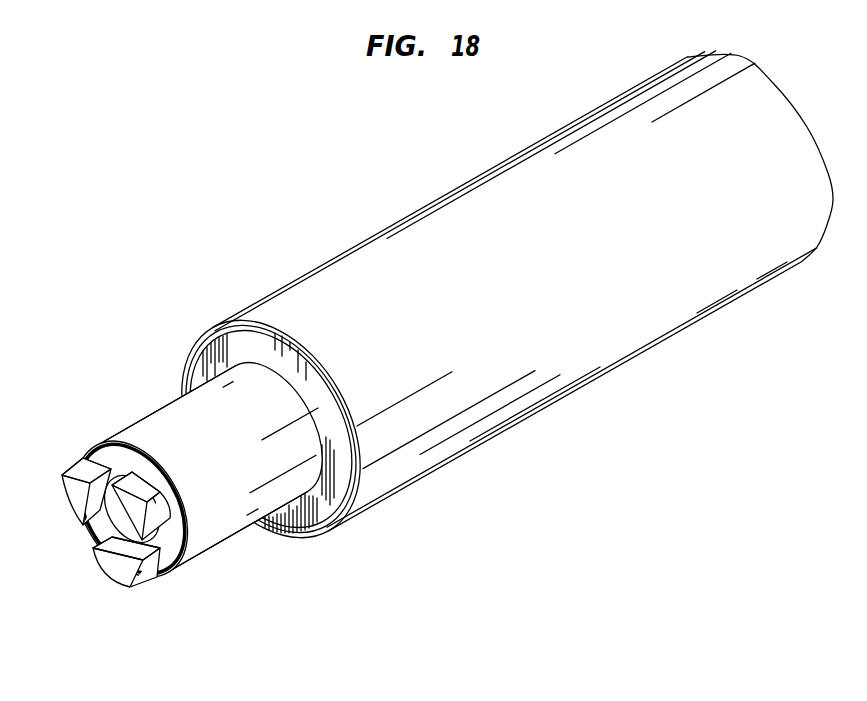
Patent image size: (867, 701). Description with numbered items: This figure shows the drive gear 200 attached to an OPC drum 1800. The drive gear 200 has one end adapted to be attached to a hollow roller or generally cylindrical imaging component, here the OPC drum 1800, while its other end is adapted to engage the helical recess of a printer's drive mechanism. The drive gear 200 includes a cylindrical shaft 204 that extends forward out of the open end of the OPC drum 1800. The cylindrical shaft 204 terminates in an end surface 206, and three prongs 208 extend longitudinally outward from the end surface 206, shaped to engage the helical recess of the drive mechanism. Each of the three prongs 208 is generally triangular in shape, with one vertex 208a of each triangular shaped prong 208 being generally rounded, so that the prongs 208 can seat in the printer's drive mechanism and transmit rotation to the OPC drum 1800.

The drive gear 200 is at (107, 300).
The cylindrical shaft 204 is at (221, 530).
The end surface 206 is at (115, 457).
The prongs 208 is at (141, 512).
The vertex 208a is at (73, 463).
The OPC drum 1800 is at (543, 294).